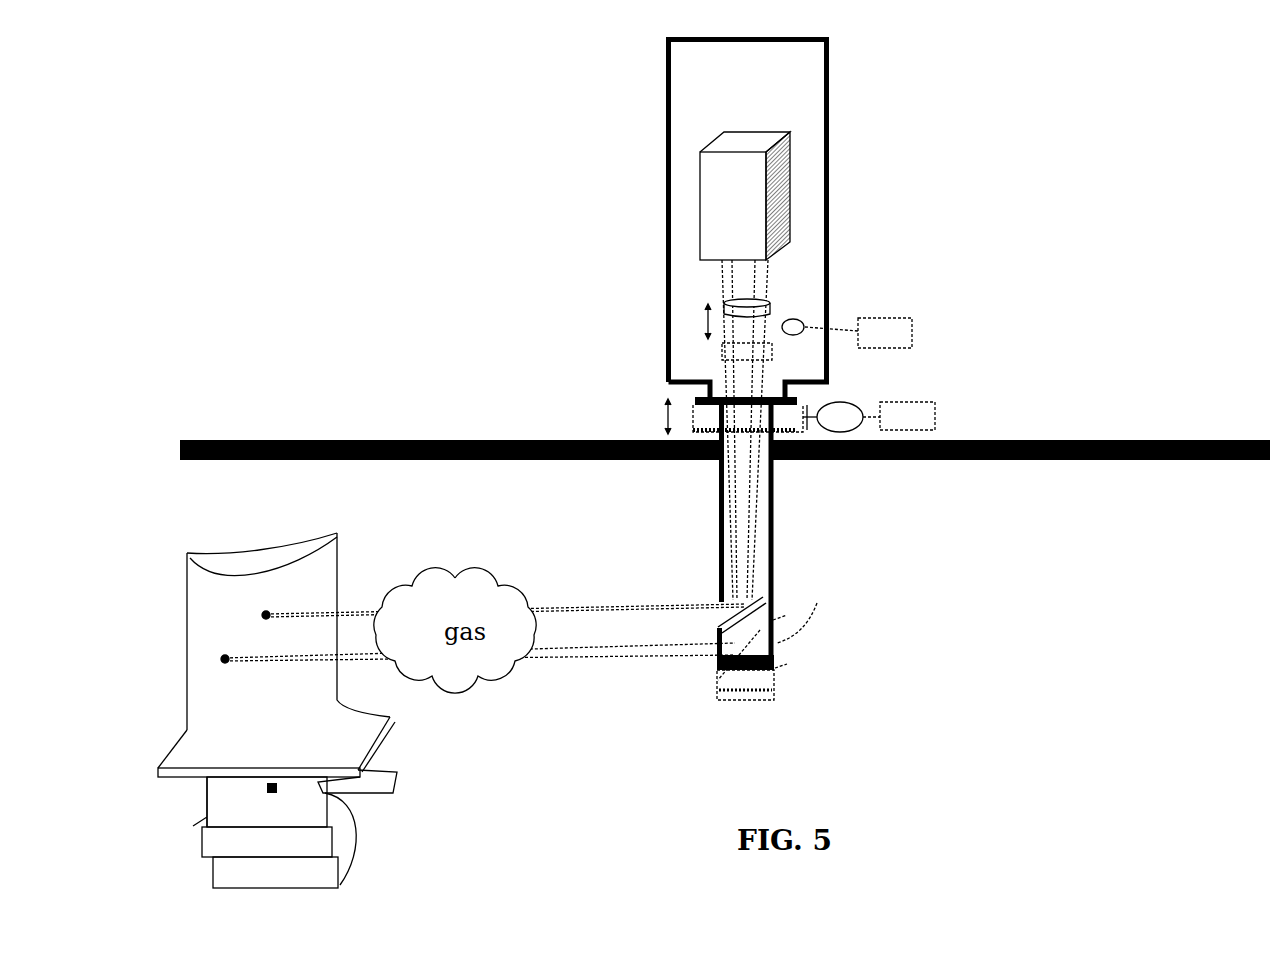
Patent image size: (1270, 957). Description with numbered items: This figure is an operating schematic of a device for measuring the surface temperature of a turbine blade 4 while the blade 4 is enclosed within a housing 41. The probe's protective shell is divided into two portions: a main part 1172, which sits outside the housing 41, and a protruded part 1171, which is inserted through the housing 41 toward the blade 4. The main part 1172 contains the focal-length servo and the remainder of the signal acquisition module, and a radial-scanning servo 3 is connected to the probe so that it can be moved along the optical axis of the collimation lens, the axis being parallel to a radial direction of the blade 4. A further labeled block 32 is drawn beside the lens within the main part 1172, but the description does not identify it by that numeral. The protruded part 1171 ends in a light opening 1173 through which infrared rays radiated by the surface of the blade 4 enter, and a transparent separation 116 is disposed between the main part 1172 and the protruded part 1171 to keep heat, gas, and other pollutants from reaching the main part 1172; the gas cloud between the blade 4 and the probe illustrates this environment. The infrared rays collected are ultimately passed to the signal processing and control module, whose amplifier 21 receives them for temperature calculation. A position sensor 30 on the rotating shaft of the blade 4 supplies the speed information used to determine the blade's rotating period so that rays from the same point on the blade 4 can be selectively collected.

The main part 1172 is at (830, 135).
The amplifier 21 is at (745, 196).
The lens actuator controller 32 is at (817, 329).
The radial-scanning servo 3 is at (814, 417).
The housing 41 is at (480, 442).
The protruded part 1171 is at (773, 537).
The light opening 1173 is at (712, 600).
The transparent separation 116 is at (775, 600).
The turbine blade 4 is at (277, 663).
The position sensor 30 is at (274, 832).